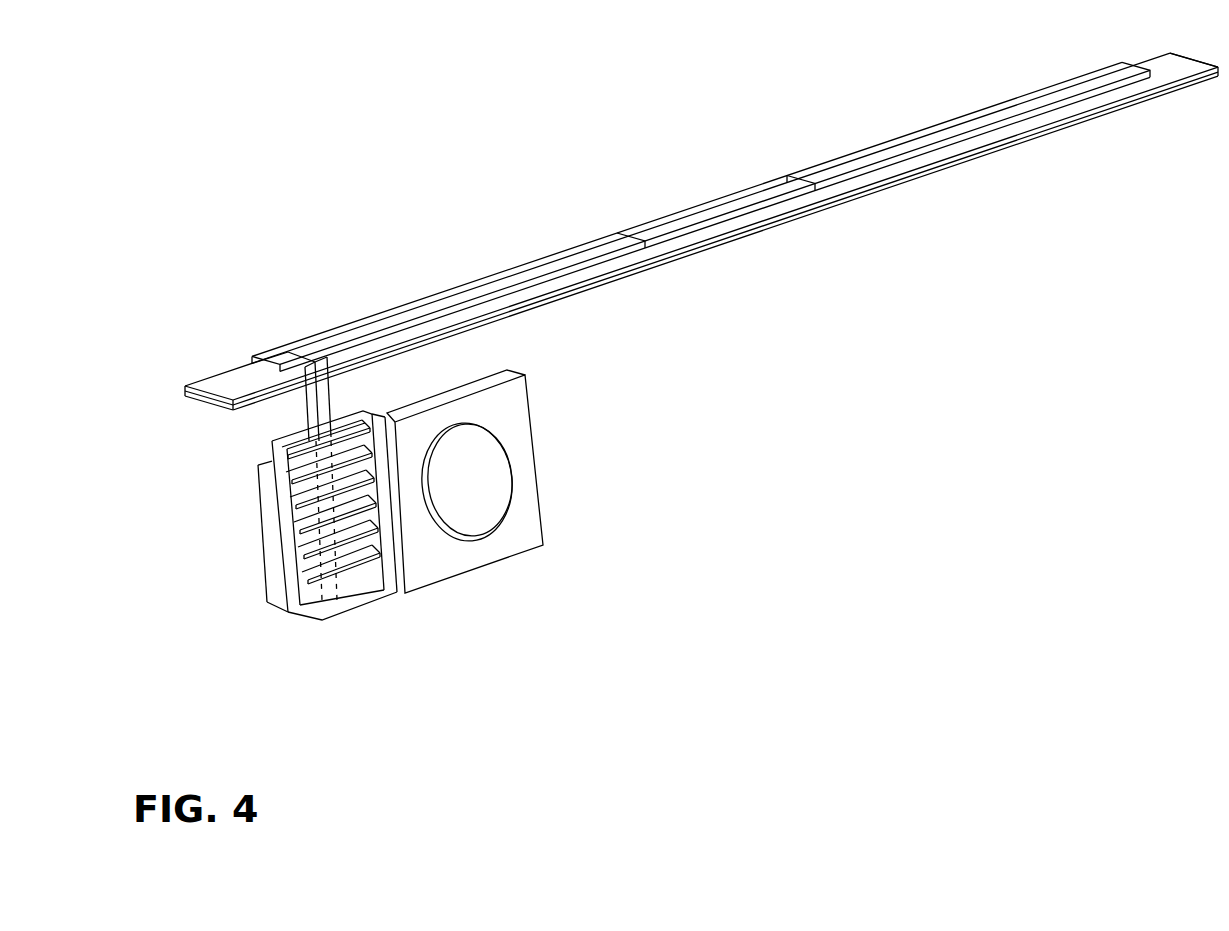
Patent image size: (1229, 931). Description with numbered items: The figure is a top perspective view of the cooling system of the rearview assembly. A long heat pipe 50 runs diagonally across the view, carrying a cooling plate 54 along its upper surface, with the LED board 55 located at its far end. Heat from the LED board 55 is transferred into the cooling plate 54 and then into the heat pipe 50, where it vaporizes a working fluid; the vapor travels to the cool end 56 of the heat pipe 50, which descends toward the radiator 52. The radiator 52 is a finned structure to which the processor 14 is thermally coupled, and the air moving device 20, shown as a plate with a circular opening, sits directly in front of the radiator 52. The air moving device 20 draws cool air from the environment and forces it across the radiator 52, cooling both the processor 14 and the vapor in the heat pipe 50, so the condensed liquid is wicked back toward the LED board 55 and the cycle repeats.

The processor 14 is at (265, 500).
The air moving device 20 is at (483, 550).
The heat pipe 50 is at (641, 230).
The radiator 52 is at (290, 548).
The cooling plate 54 is at (905, 160).
The LED board 55 is at (1175, 97).
The cool end 56 is at (316, 404).